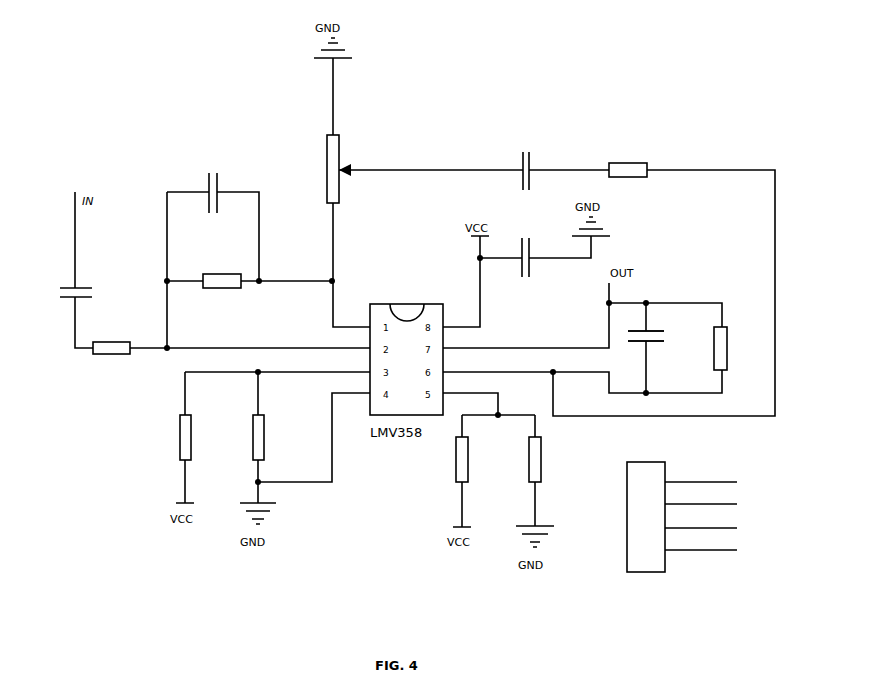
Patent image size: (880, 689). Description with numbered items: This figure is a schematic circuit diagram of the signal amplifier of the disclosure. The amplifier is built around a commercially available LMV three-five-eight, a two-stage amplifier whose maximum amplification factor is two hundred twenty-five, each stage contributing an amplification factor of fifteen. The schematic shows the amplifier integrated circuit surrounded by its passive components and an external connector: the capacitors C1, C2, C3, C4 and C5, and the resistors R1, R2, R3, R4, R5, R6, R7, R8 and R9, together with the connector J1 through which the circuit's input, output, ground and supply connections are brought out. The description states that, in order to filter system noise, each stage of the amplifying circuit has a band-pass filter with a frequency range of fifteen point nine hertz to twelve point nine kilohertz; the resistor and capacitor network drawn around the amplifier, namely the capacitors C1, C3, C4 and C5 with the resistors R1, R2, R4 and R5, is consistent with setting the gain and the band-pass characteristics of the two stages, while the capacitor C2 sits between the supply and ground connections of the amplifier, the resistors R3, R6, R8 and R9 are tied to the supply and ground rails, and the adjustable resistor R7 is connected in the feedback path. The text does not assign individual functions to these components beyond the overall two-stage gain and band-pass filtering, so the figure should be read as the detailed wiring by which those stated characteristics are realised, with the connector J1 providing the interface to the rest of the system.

The capacitor 82pF C1 is at (217, 188).
The capacitor 0.1uF C2 is at (532, 256).
The capacitor 82pF C3 is at (655, 341).
The capacitor 1uF C4 is at (541, 169).
The capacitor 1uF C5 is at (66, 294).
The resistor 150k R1 is at (222, 280).
The resistor 10k R2 is at (111, 351).
The resistor 10k R3 is at (273, 437).
The resistor 150k R4 is at (738, 351).
The resistor 10k R5 is at (630, 170).
The resistor 10k R6 is at (548, 461).
The potentiometer 100k R7 is at (312, 169).
The resistor 10k R8 is at (187, 437).
The resistor 10k R9 is at (462, 459).
The connector J1 is at (685, 508).